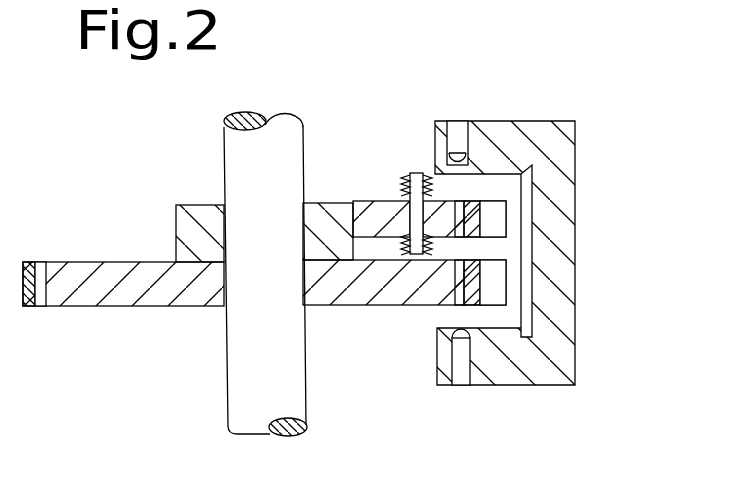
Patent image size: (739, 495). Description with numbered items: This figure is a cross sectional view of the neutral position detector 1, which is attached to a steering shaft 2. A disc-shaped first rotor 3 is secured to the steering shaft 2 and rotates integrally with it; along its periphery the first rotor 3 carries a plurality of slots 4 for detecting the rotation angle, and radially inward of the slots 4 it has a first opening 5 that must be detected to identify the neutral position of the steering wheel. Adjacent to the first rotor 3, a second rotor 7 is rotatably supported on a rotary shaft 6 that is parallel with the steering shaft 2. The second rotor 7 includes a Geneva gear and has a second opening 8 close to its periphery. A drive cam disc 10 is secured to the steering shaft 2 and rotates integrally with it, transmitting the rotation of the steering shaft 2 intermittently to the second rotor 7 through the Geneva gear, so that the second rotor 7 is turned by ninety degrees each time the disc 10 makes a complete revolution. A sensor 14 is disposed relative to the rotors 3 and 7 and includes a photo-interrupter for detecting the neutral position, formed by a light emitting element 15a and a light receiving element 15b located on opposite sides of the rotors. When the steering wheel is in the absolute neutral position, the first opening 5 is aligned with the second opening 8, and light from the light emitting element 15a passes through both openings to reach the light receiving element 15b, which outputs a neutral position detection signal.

The neutral position detector 1 is at (536, 260).
The steering shaft 2 is at (232, 406).
The first rotor 3 is at (116, 272).
The slots 4 is at (39, 262).
The first opening 5 is at (462, 303).
The rotary shaft 6 is at (416, 173).
The second rotor 7 is at (374, 218).
The second opening 8 is at (464, 202).
The drive cam disc 10 is at (198, 214).
The sensor 14 is at (575, 247).
The light emitting element 15a is at (461, 388).
The light receiving element 15b is at (456, 131).